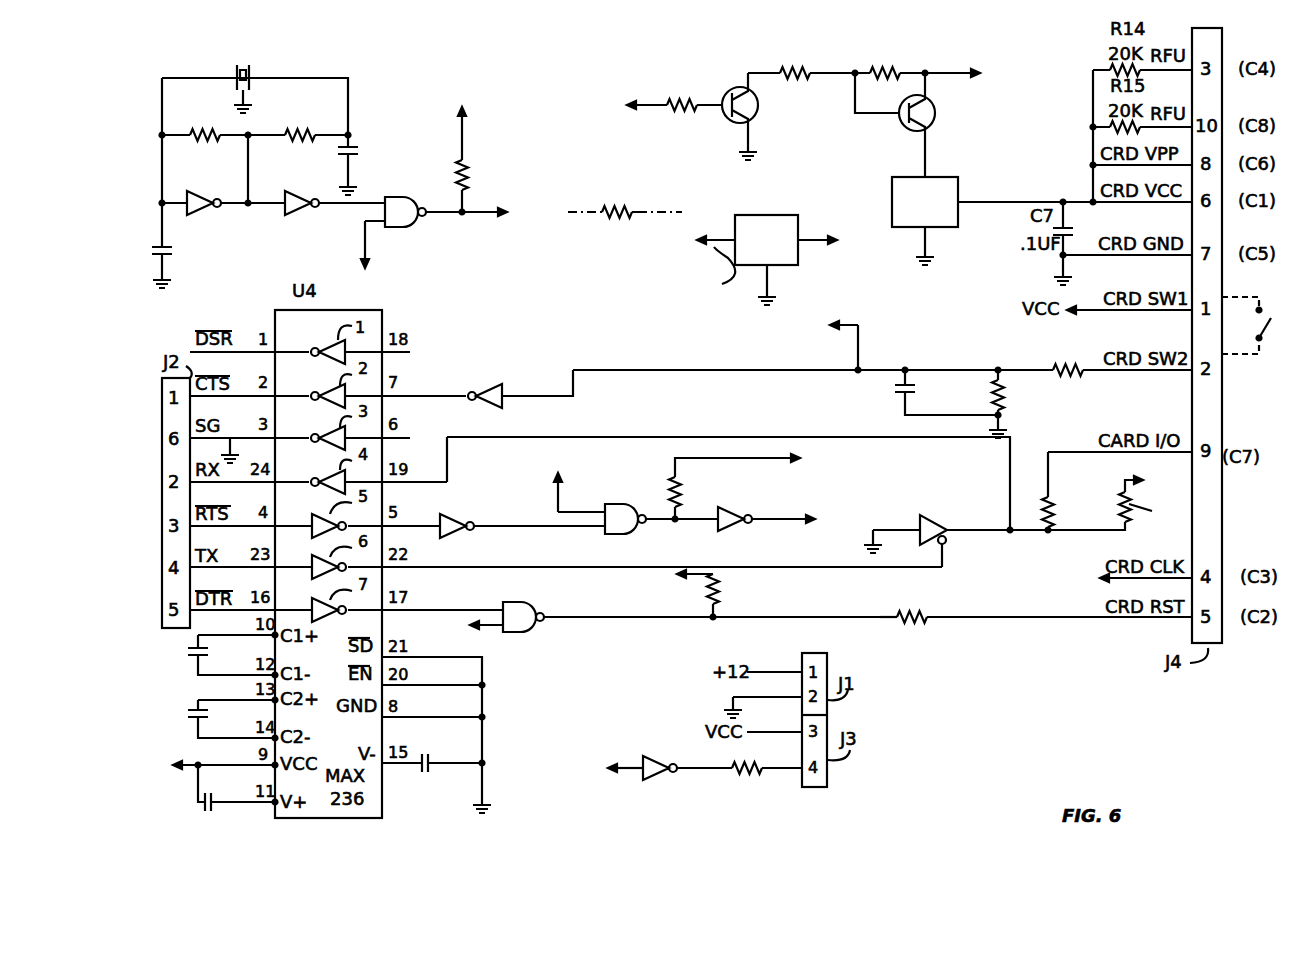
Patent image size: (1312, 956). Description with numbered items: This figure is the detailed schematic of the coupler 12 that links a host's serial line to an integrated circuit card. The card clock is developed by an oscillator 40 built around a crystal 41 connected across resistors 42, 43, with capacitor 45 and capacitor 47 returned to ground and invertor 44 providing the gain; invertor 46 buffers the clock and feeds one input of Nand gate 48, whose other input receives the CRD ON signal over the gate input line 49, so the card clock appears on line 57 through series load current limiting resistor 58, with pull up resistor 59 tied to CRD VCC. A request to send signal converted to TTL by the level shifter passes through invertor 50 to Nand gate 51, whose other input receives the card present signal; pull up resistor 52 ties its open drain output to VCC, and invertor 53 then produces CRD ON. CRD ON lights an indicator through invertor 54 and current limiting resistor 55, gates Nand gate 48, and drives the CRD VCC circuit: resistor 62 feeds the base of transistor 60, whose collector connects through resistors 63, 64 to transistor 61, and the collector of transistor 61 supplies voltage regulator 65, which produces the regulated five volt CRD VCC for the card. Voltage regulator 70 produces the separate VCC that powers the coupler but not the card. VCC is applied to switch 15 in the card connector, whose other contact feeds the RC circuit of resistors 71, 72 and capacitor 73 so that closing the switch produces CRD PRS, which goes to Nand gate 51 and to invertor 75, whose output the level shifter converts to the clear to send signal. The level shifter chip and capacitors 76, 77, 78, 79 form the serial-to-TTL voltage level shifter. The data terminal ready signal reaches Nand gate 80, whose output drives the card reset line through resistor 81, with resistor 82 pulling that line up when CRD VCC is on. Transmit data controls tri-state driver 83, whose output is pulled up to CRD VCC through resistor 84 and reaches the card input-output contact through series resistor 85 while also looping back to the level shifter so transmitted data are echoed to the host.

The coupler 12 is at (1021, 647).
The switch 15 is at (1268, 330).
The oscillator 40 is at (392, 52).
The crystal 41 is at (250, 86).
The resistor 42 is at (218, 142).
The resistor 43 is at (306, 142).
The invertor 44 is at (212, 196).
The capacitor 45 is at (152, 250).
The invertor 46 is at (306, 196).
The capacitor 47 is at (356, 150).
The Nand gate 48 is at (396, 197).
The CRD ON line 49 is at (365, 221).
The invertor 50 is at (470, 539).
The Nand gate 51 is at (636, 538).
The pull up resistor 52 is at (673, 481).
The invertor 53 is at (736, 537).
The invertor 54 is at (675, 775).
The current limiting resistor 55 is at (753, 762).
The line 57 is at (484, 214).
The series load current limiting resistor 58 is at (604, 202).
The pull up resistor 59 is at (466, 160).
The transistor 60 is at (740, 124).
The transistor 61 is at (906, 129).
The resistor 62 is at (691, 113).
The resistor 63 is at (784, 66).
The resistor 64 is at (897, 80).
The voltage regulator 65 is at (892, 196).
The voltage regulator 70 is at (751, 209).
The resistor 71 is at (1079, 378).
The resistor 72 is at (989, 380).
The capacitor 73 is at (898, 391).
The invertor 75 is at (491, 409).
The capacitor 76 is at (190, 652).
The capacitor 77 is at (190, 716).
The capacitor 78 is at (205, 800).
The capacitor 79 is at (423, 778).
The Nand gate 80 is at (541, 630).
The resistor 81 is at (910, 611).
The resistor 82 is at (706, 595).
The tri-state driver 83 is at (945, 543).
The resistor 84 is at (1117, 499).
The series resistor 85 is at (1055, 500).